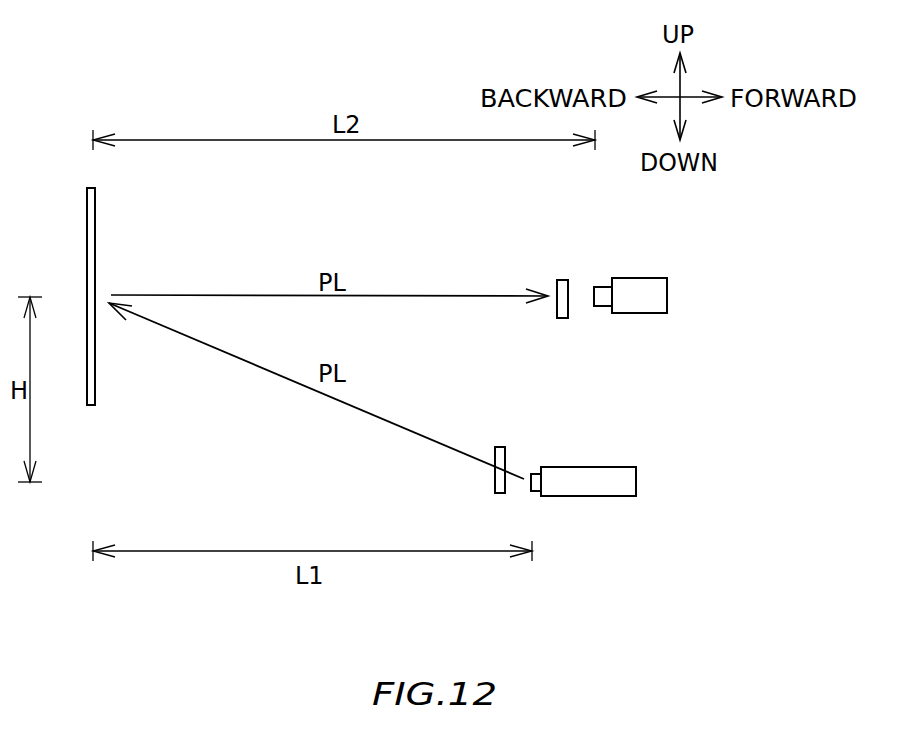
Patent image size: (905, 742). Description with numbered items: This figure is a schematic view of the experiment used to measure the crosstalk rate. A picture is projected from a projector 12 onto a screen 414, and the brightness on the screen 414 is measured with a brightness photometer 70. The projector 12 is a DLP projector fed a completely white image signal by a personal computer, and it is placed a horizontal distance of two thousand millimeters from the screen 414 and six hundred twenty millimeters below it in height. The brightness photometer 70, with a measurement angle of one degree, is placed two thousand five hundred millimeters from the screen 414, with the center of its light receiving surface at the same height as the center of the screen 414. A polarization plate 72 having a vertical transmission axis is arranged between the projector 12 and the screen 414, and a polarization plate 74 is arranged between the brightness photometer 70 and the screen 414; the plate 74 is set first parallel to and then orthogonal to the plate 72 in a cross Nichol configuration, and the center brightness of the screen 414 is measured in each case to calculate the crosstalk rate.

The screen 414 is at (87, 221).
The polarization plate 74 is at (562, 280).
The brightness photometer 70 is at (637, 278).
The polarization plate 72 is at (501, 447).
The projector 12 is at (582, 467).